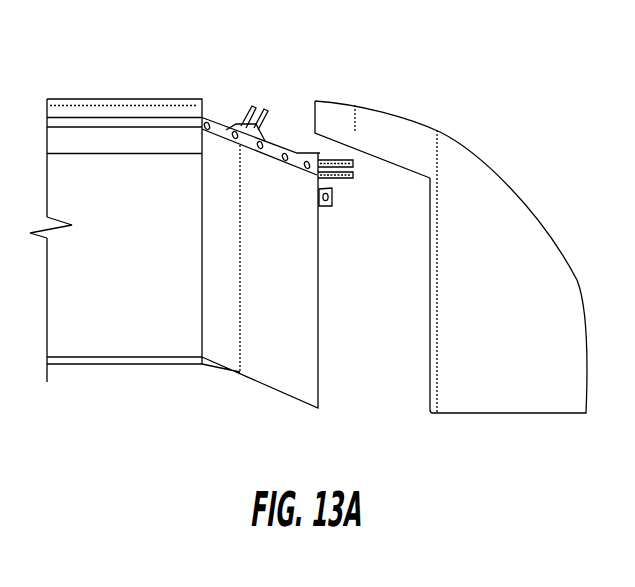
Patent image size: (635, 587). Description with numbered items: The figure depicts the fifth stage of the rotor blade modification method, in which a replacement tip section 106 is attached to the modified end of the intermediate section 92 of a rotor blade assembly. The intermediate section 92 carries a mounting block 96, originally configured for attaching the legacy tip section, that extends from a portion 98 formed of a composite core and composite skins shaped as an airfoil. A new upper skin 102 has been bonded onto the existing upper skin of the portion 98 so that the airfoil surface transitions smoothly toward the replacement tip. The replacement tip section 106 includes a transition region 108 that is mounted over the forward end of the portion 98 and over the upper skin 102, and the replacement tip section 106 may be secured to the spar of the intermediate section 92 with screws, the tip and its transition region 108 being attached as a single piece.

The intermediate section 92 is at (104, 169).
The mounting block 96 is at (243, 115).
The portion 98 is at (225, 396).
The upper skin 102 is at (270, 368).
The replacement tip section 106 is at (493, 205).
The transition region 108 is at (378, 122).